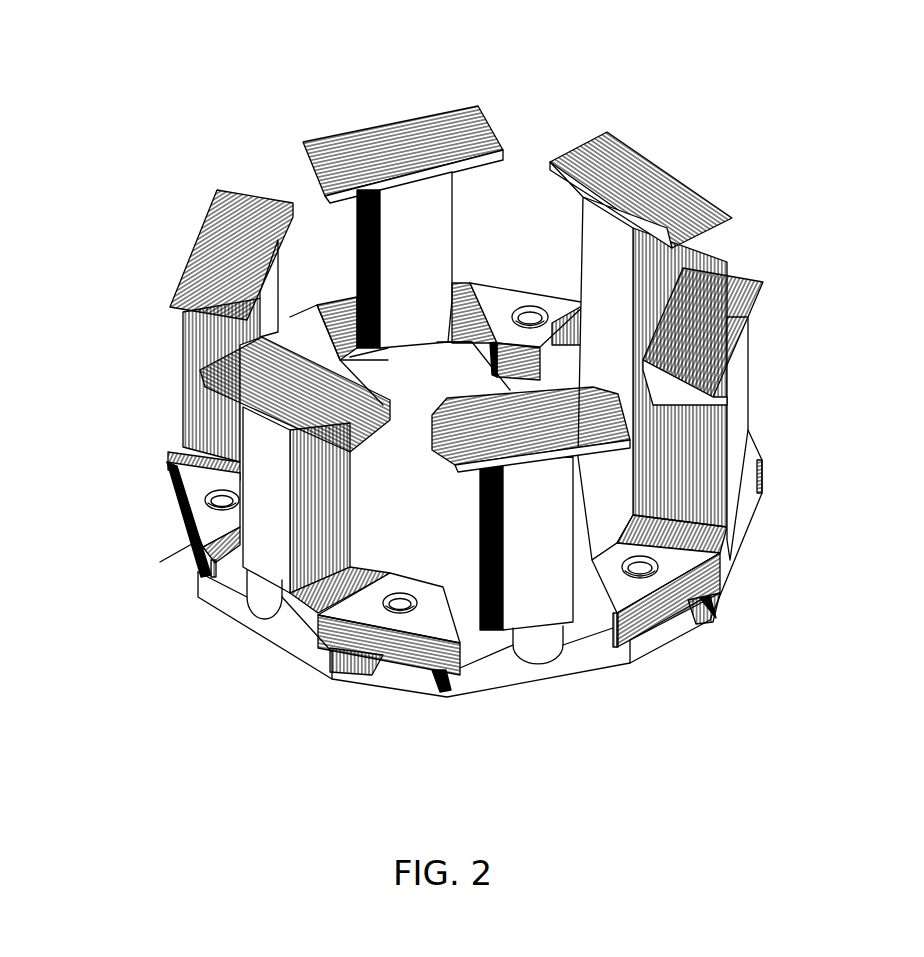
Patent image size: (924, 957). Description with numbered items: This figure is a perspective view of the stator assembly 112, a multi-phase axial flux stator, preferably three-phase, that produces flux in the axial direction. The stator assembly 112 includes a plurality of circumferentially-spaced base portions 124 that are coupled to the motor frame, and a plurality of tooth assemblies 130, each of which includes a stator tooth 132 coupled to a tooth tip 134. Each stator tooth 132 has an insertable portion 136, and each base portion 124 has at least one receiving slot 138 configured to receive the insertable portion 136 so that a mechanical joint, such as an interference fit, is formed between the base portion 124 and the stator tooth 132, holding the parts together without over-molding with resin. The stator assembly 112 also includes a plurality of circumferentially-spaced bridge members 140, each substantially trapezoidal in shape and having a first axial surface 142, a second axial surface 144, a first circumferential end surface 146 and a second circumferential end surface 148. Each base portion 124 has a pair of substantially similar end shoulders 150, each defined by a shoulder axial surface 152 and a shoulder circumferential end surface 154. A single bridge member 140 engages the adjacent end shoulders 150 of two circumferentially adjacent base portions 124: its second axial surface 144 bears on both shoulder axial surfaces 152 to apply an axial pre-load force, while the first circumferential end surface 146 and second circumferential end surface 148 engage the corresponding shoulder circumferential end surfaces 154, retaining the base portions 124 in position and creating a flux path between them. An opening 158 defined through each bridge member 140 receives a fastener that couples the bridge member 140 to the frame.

The stator assembly 112 is at (798, 78).
The base portion 124 is at (282, 633).
The tooth assembly 130 is at (574, 124).
The stator tooth 132 is at (432, 241).
The tooth tip 134 is at (470, 167).
The insertable portion 136 is at (538, 632).
The receiving slot 138 is at (560, 670).
The bridge member 140 is at (510, 298).
The first axial surface 142 is at (421, 582).
The second axial surface 144 is at (417, 672).
The first circumferential end surface 146 is at (381, 578).
The second circumferential end surface 148 is at (440, 588).
The end shoulder 150 is at (477, 690).
The shoulder axial surface 152 is at (448, 680).
The shoulder circumferential end surface 154 is at (468, 678).
The opening 158 is at (398, 588).